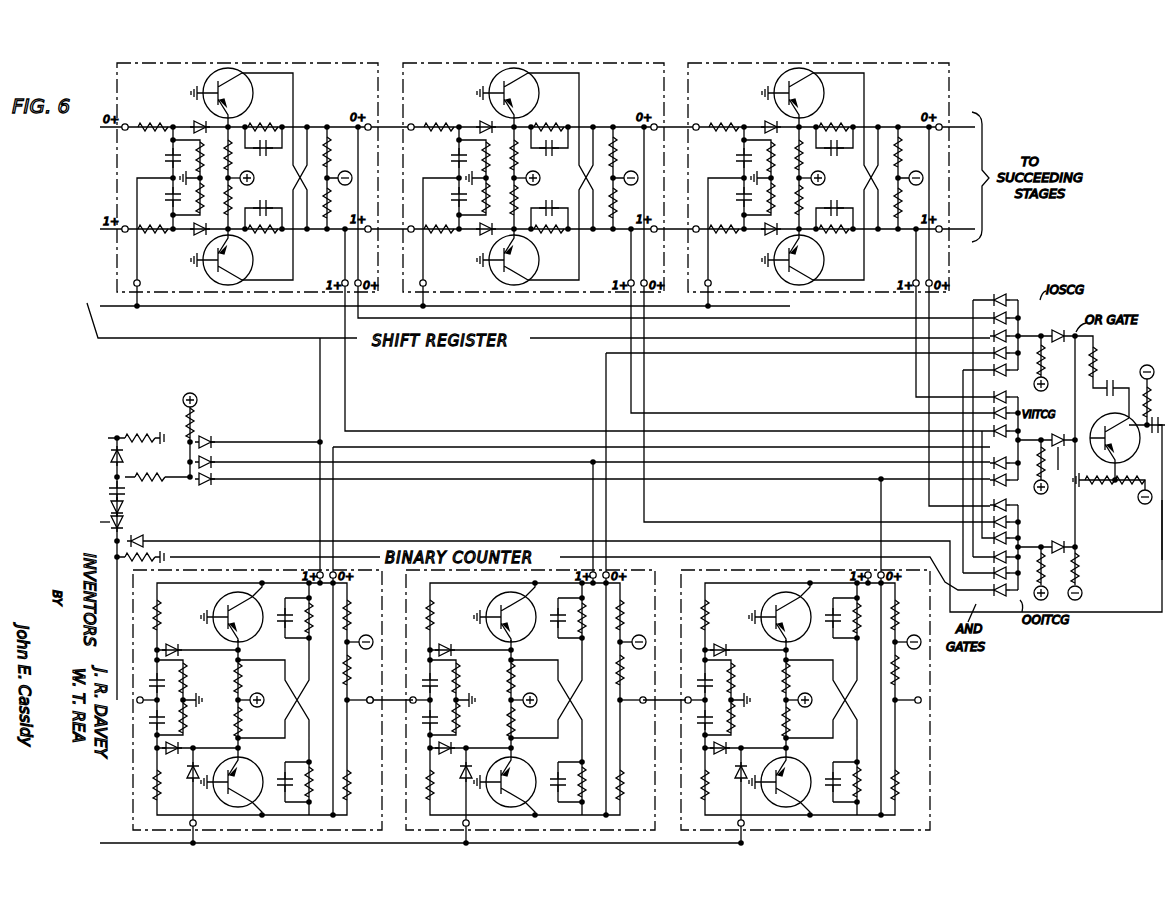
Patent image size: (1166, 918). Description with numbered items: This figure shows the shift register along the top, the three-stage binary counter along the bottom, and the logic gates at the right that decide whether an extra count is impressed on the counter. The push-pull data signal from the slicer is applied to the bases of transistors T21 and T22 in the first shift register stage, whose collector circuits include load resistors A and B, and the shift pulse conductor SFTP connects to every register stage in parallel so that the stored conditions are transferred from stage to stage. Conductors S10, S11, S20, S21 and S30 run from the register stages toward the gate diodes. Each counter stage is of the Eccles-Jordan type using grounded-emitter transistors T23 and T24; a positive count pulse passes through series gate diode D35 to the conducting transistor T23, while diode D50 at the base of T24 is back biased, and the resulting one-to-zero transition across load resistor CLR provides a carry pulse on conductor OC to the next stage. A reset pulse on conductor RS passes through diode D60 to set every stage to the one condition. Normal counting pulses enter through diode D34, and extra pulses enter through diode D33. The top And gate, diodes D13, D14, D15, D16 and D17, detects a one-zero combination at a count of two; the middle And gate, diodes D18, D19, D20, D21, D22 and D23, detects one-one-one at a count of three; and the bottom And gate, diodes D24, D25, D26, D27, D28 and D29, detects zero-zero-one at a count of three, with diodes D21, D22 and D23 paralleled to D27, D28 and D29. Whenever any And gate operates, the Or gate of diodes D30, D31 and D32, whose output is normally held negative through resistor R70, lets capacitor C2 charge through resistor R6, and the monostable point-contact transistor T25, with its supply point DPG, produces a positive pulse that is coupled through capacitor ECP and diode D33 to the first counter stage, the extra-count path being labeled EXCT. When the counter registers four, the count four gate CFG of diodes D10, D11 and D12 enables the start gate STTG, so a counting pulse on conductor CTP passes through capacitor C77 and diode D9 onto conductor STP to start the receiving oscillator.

The transistor T21 is at (251, 80).
The transistor T22 is at (251, 276).
The resistor A is at (476, 152).
The resistor B is at (476, 203).
The shift pulse conductor SFTP is at (154, 307).
The shift register output line S10 is at (334, 505).
The shift register output line S11 is at (318, 506).
The shift register output line S20 is at (600, 505).
The shift register output line S21 is at (592, 506).
The shift register output line S30 is at (880, 498).
The conductor STP is at (112, 433).
The diode D9 is at (124, 458).
The capacitor C77 is at (126, 492).
The start gate STTG is at (124, 507).
The diode D34 is at (124, 522).
The conductor CTP is at (91, 522).
The diode D33 is at (150, 537).
The count four gate CFG is at (206, 435).
The diode D10 is at (208, 436).
The diode D11 is at (208, 456).
The diode D12 is at (208, 473).
The transistor T23 is at (226, 604).
The transistor T24 is at (258, 762).
The diode D35 is at (178, 638).
The diode D50 is at (180, 744).
The diode D60 is at (186, 776).
The load resistor CLR is at (360, 775).
The conductor OC is at (381, 698).
The conductor RS is at (130, 842).
The diode D13 is at (986, 304).
The diode D14 is at (986, 322).
The diode D15 is at (986, 340).
The diode D16 is at (986, 357).
The diode D17 is at (999, 376).
The diode D18 is at (1016, 392).
The diode D19 is at (996, 418).
The diode D20 is at (988, 433).
The diode D21 is at (1046, 435).
The diode D22 is at (990, 465).
The diode D23 is at (998, 487).
The diode D24 is at (1010, 502).
The diode D25 is at (1012, 525).
The diode D26 is at (1012, 541).
The diode D27 is at (986, 560).
The diode D28 is at (986, 577).
The diode D29 is at (1012, 604).
The diode D30 is at (1050, 325).
The diode D31 is at (1056, 459).
The diode D32 is at (1066, 541).
The resistor R6 is at (1098, 347).
The capacitor C2 is at (1106, 382).
The point contact type transistor T25 is at (1104, 414).
The drive pulse generator output DPG is at (1138, 365).
The capacitor ECP is at (1112, 483).
The resistor R70 is at (1081, 572).
The excitation line EXCT is at (1161, 553).